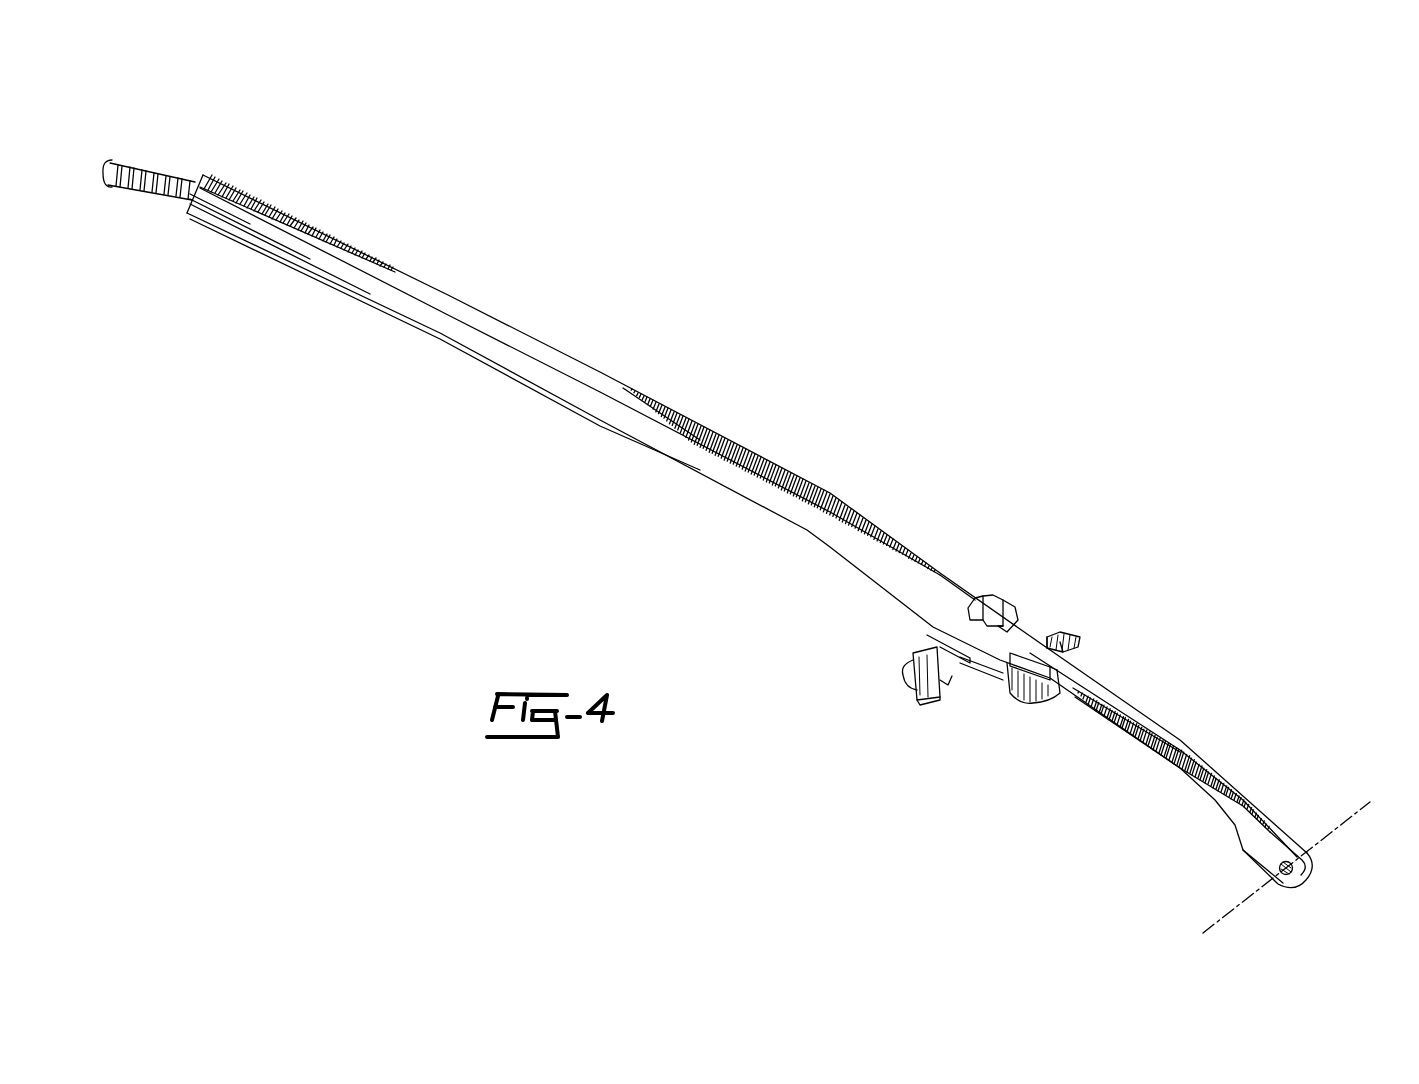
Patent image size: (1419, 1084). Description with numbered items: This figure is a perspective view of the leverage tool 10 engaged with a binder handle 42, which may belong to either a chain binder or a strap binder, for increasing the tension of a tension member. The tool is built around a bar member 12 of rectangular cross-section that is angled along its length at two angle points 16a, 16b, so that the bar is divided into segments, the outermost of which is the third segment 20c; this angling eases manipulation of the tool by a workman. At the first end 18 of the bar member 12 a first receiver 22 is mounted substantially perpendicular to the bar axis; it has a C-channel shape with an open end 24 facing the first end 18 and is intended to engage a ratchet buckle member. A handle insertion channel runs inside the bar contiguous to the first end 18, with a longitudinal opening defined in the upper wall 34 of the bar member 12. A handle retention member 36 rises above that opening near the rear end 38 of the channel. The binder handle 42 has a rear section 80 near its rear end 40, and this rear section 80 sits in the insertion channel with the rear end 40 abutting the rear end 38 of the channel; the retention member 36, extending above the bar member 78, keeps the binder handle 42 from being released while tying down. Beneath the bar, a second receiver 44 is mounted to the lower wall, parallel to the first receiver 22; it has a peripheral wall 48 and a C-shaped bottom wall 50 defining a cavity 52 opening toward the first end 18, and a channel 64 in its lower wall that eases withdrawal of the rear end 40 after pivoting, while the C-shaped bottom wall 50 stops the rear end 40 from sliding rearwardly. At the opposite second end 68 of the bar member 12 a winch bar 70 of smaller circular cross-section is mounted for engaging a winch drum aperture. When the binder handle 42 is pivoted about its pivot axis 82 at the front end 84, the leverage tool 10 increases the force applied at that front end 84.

The leverage tool 10 is at (590, 280).
The bar member 12 is at (452, 294).
The angle point 16a is at (927, 636).
The angle point 16b is at (830, 492).
The first end 18 is at (1004, 669).
The third segment 20c is at (327, 240).
The first receiver 22 is at (1075, 640).
The open end 24 is at (1043, 689).
The upper wall 34 is at (697, 423).
The handle retention member 36 is at (1010, 600).
The rear end of the handle insertion channel 38 is at (975, 598).
The rear end of the binder handle 40 is at (987, 598).
The binder handle 42 is at (1232, 752).
The second receiver 44 is at (933, 700).
The peripheral wall 48 is at (908, 657).
The C-shaped bottom wall 50 is at (910, 676).
The cavity 52 is at (946, 702).
The channel 64 is at (942, 690).
The second end 68 is at (215, 185).
The winch bar 70 is at (140, 166).
The bar member 78 is at (1143, 760).
The rear section 80 is at (1062, 635).
The pivot axis 82 is at (1341, 820).
The front end 84 is at (1253, 849).